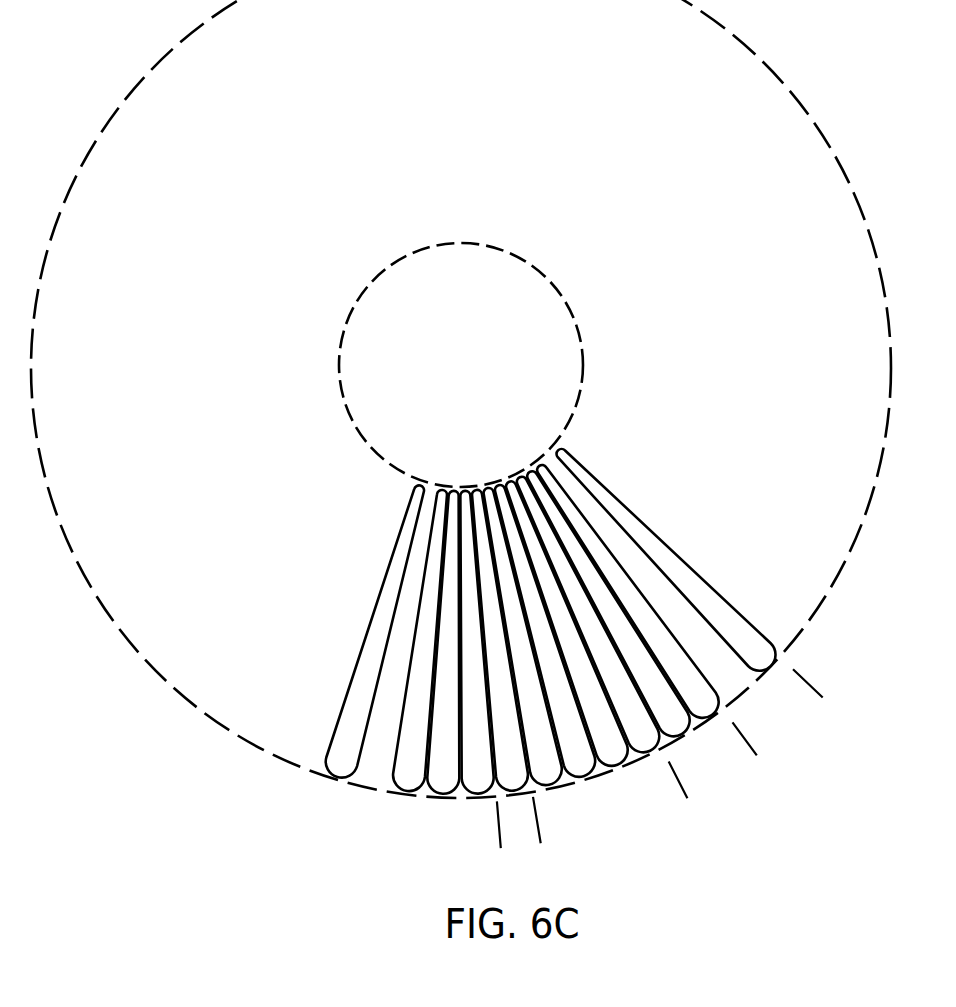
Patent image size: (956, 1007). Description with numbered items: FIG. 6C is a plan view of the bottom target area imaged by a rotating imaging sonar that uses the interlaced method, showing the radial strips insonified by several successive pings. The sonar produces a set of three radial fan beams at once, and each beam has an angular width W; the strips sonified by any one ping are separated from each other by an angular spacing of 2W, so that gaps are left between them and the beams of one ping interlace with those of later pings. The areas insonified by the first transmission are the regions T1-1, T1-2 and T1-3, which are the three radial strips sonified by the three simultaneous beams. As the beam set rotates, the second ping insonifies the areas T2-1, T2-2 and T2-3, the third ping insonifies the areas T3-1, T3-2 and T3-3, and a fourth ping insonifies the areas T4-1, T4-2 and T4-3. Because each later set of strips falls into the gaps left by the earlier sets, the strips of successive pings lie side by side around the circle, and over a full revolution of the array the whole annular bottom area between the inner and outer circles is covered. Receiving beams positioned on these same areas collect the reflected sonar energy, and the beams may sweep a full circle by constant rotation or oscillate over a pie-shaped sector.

The region insonified by first transmission T1-1 is at (665, 558).
The region insonified by first transmission T1-2 is at (625, 590).
The region insonified by first transmission T1-3 is at (584, 613).
The area insonified by second ping T2-1 is at (606, 603).
The area insonified by second ping T2-2 is at (563, 623).
The area insonified by second ping T2-3 is at (518, 636).
The area insonified by third ping T3-1 is at (541, 631).
The area insonified by third ping T3-2 is at (495, 640).
The area insonified by third ping T3-3 is at (448, 642).
The area insonified by fourth ping T4-1 is at (471, 642).
The area insonified by fourth ping T4-2 is at (424, 640).
The area insonified by fourth ping T4-3 is at (379, 631).
The angular width of each beam W is at (572, 823).
The angular separation of twice the beam width 2W is at (810, 685).